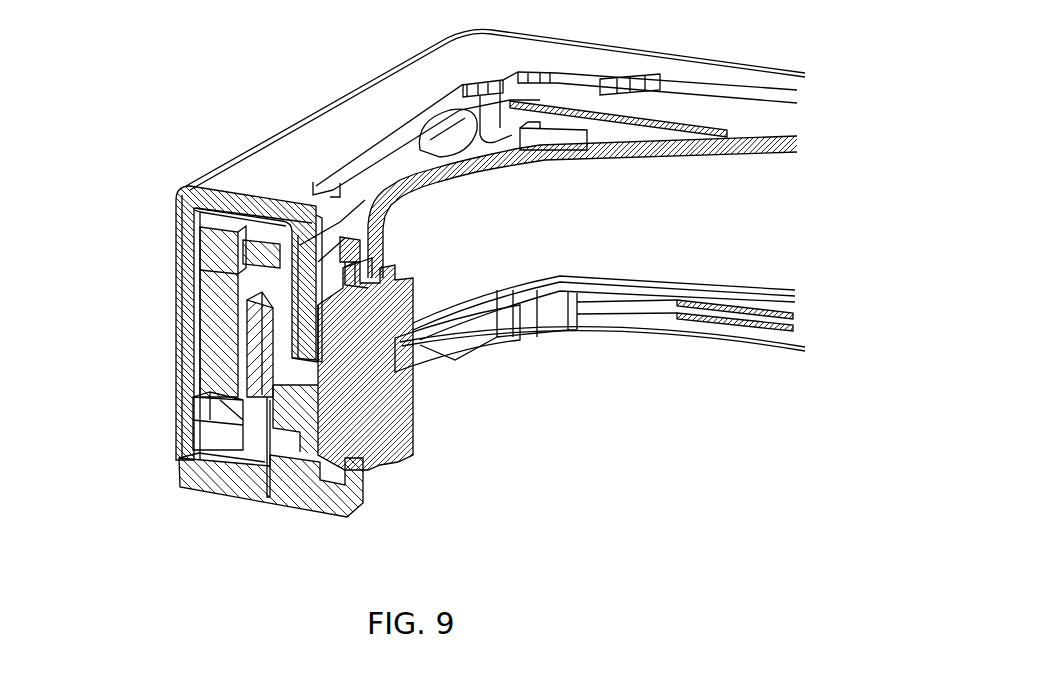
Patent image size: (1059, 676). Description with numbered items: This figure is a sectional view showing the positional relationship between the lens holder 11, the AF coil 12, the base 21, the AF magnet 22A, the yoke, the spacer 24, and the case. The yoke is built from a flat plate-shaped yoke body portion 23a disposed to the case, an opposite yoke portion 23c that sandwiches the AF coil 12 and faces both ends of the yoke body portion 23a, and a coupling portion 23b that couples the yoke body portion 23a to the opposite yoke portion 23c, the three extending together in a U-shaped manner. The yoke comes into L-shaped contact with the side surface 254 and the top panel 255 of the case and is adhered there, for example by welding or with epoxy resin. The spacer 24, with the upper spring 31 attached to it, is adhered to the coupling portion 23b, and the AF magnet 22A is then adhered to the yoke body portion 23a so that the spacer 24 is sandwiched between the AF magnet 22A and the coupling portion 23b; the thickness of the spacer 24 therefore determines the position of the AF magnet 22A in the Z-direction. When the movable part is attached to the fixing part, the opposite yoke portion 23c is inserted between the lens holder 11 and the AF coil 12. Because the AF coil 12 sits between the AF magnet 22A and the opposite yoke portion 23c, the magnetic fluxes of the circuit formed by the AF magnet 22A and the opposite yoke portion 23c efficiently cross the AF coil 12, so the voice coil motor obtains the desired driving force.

The top panel 255 is at (292, 152).
The coupling portion 23b is at (223, 197).
The spacer 24 is at (178, 240).
The AF magnet 22A is at (182, 286).
The yoke body portion 23a is at (185, 320).
The side surface 254 is at (180, 412).
The upper spring 31 is at (388, 208).
The opposite yoke portion 23c is at (335, 318).
The lens holder 11 is at (400, 408).
The base 21 is at (210, 490).
The AF coil 12 is at (265, 500).